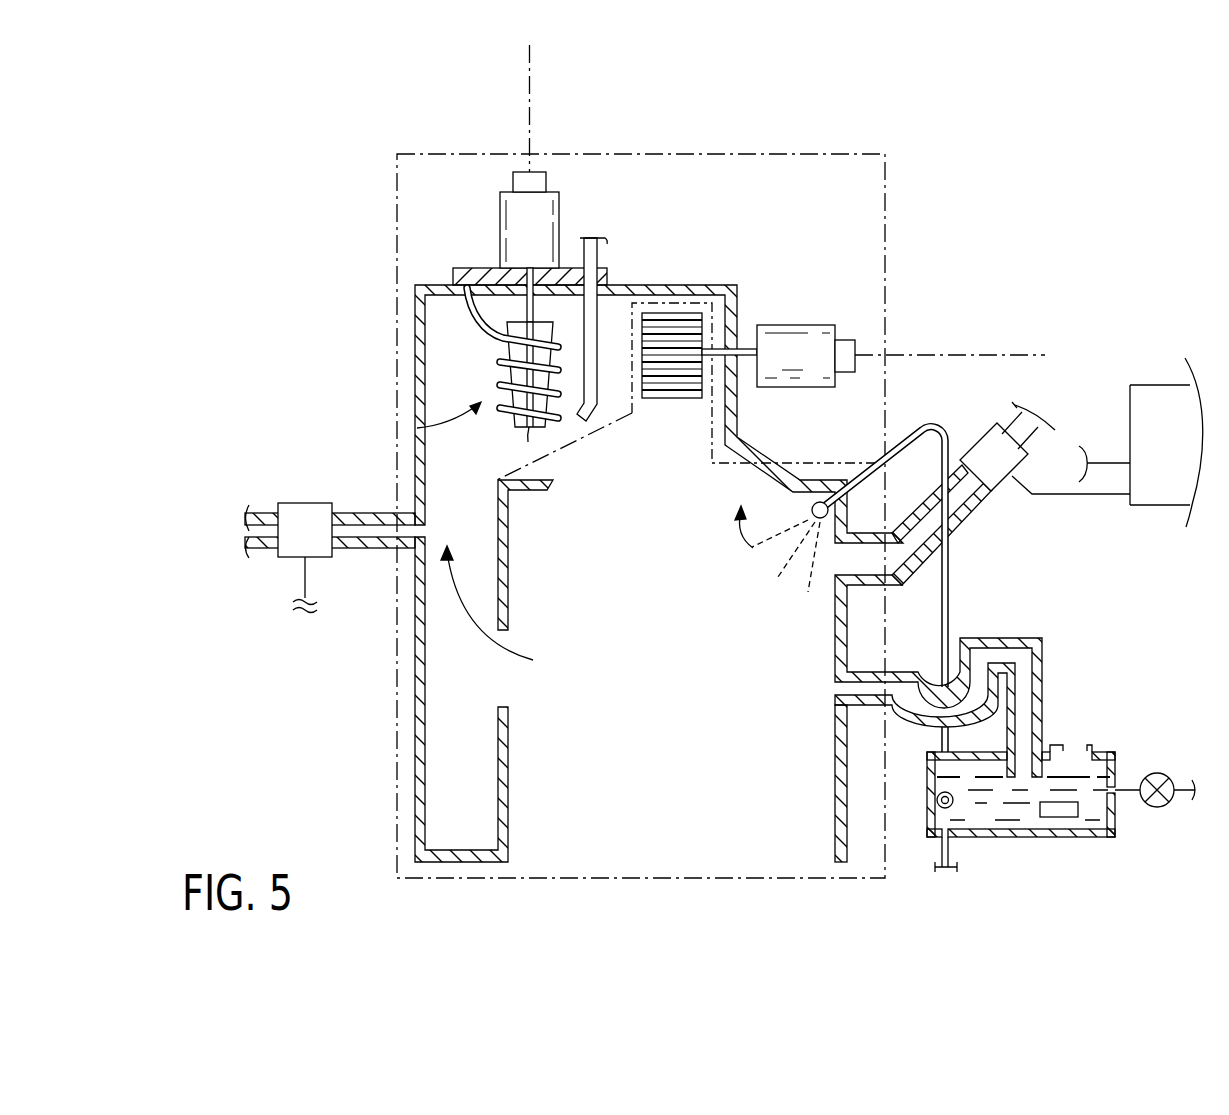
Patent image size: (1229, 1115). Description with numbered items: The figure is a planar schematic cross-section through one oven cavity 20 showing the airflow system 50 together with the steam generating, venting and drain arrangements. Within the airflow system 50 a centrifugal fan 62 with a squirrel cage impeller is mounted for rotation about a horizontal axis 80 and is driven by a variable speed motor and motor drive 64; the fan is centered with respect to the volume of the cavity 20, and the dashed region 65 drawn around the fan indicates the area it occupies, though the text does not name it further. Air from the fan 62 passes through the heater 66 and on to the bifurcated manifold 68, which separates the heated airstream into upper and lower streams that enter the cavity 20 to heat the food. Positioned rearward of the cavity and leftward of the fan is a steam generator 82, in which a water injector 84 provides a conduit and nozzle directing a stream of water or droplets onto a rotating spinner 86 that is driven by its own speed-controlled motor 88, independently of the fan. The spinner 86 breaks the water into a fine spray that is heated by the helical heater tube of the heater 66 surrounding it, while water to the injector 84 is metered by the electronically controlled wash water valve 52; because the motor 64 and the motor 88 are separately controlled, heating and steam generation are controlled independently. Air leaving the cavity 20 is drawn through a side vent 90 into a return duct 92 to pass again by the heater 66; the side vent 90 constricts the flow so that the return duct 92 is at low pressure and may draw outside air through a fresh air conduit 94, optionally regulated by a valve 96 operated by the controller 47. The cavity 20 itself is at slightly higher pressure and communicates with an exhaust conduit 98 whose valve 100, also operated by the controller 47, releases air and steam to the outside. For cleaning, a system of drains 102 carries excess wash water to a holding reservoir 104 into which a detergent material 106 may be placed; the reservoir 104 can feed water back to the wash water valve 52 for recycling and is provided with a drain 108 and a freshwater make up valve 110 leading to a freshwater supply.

The cavity 20 is at (677, 667).
The controller 47 is at (1146, 469).
The airflow system 50 is at (760, 288).
The wash water valve 52 is at (568, 273).
The fan 62 is at (677, 313).
The motor and motor drive 64 is at (803, 325).
The blower housing 65 is at (653, 303).
The heater 66 is at (497, 392).
The bifurcated manifold 68 is at (647, 460).
The horizontal axis 80 is at (950, 355).
The steam generator 82 is at (417, 428).
The water injector 84 is at (597, 413).
The spinner 86 is at (532, 427).
The speed-controlled motor 88 is at (518, 228).
The side vent 90 is at (510, 688).
The return duct 92 is at (452, 732).
The fresh air conduit 94 is at (355, 532).
The valve 96 is at (285, 552).
The exhaust conduit 98 is at (917, 562).
The valve 100 is at (997, 484).
The drains 102 is at (1014, 622).
The holding reservoir 104 is at (1010, 812).
The detergent material 106 is at (1080, 807).
The drain 108 is at (950, 853).
The freshwater make up valve 110 is at (1153, 773).